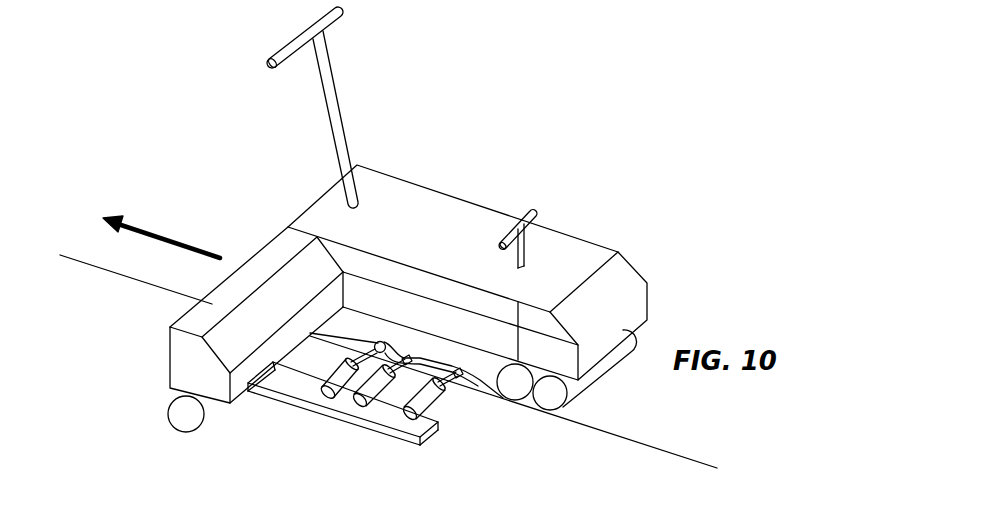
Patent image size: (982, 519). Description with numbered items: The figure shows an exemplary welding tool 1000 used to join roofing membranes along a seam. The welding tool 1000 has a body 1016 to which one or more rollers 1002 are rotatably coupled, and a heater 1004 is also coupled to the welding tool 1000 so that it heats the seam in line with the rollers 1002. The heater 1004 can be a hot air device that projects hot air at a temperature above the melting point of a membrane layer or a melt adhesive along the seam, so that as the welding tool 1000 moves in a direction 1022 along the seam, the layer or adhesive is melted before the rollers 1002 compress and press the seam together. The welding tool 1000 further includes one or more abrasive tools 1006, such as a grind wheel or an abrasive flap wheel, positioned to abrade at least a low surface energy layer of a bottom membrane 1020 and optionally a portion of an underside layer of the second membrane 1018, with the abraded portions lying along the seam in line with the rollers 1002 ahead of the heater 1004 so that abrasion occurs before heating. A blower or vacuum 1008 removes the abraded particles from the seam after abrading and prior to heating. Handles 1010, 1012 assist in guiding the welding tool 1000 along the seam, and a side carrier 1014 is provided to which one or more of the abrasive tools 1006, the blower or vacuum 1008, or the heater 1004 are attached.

The welding tool 1000 is at (641, 179).
The rollers 1002 is at (516, 393).
The heater 1004 is at (410, 406).
The abrasive tools 1006 is at (304, 384).
The blower or vacuum 1008 is at (362, 394).
The handle 1010 is at (278, 51).
The handle 1012 is at (528, 206).
The side carrier 1014 is at (188, 364).
The body 1016 is at (436, 203).
The second membrane 1018 is at (470, 378).
The bottom membrane 1020 is at (462, 388).
The direction 1022 is at (153, 230).